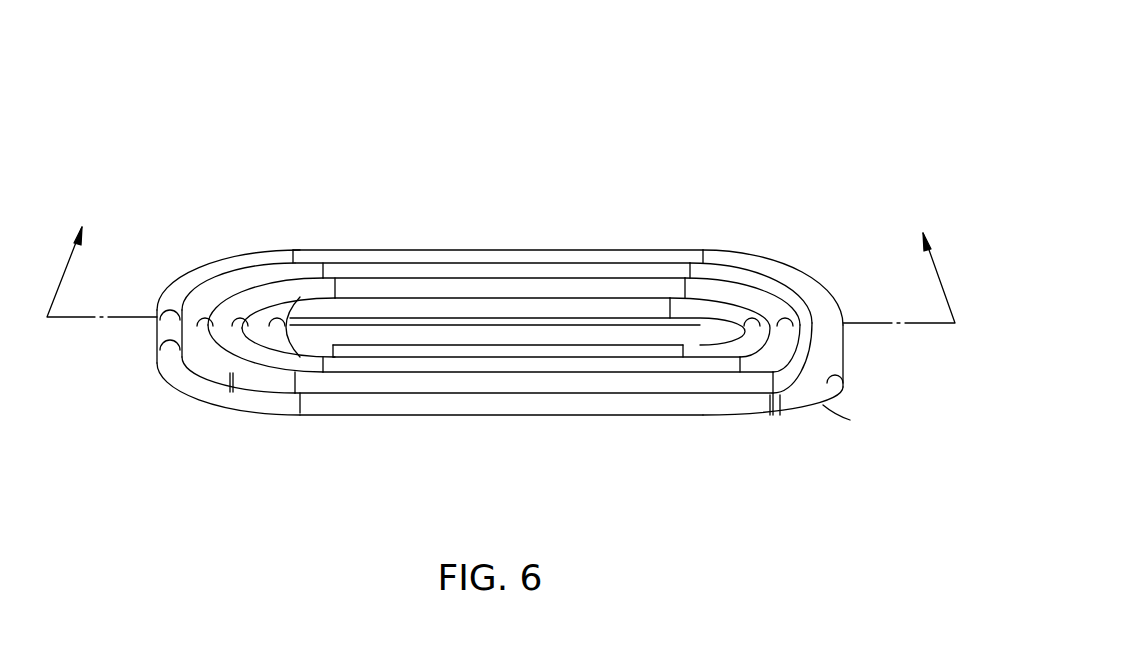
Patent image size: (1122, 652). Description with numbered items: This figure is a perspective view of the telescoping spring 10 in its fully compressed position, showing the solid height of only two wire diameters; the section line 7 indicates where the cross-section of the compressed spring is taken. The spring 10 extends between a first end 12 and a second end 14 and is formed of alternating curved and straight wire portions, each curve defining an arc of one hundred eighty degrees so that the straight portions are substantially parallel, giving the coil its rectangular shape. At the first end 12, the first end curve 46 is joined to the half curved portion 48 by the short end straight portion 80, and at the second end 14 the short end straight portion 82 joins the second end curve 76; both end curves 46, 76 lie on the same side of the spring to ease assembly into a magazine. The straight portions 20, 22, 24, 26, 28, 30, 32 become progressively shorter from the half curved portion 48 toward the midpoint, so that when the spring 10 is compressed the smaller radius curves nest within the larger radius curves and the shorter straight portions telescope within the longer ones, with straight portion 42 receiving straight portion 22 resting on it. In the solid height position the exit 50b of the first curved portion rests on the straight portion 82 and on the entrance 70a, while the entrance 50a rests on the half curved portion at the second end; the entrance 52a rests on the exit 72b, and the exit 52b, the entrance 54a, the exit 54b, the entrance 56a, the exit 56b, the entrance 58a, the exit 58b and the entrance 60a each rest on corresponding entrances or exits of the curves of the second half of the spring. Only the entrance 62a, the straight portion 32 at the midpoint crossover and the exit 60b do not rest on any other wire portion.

The telescoping spring 10 is at (678, 115).
The first end 12 is at (152, 195).
The second end 14 is at (754, 508).
The section line 7- 7 is at (502, 275).
The straight portion 20 is at (330, 250).
The straight portion 24 is at (403, 262).
The straight portion 28 is at (490, 278).
The straight portion 32 is at (585, 300).
The straight portion 22 is at (393, 397).
The straight portion 26 is at (433, 373).
The straight portion 30 is at (525, 358).
The straight portion 42 is at (343, 413).
The first end curve 46 is at (177, 387).
The half curved wire portion 48 is at (163, 297).
The entrance of curved portion 50 50a is at (838, 308).
The exit of curved portion 50 50b is at (817, 377).
The entrance of curved portion 52 52a is at (163, 367).
The exit of curved portion 52 52b is at (200, 295).
The entrance of curved portion 54 54a is at (790, 310).
The exit of curved portion 54 54b is at (790, 385).
The entrance of curved portion 56 56a is at (230, 370).
The exit of curved portion 56 56b is at (215, 298).
The entrance of curved portion 58 58a is at (760, 277).
The exit of curved portion 58 58b is at (742, 352).
The entrance of curved portion 60 60a is at (285, 355).
The exit of curved portion 60 60b is at (270, 280).
The entrance of curved portion 62 62a is at (700, 310).
The entrance of curved portion 70 70a is at (707, 417).
The exit of curved portion 72 72b is at (278, 418).
The second end curve 76 is at (820, 405).
The short end straight portion 80 is at (157, 333).
The short end straight portion 82 is at (845, 360).